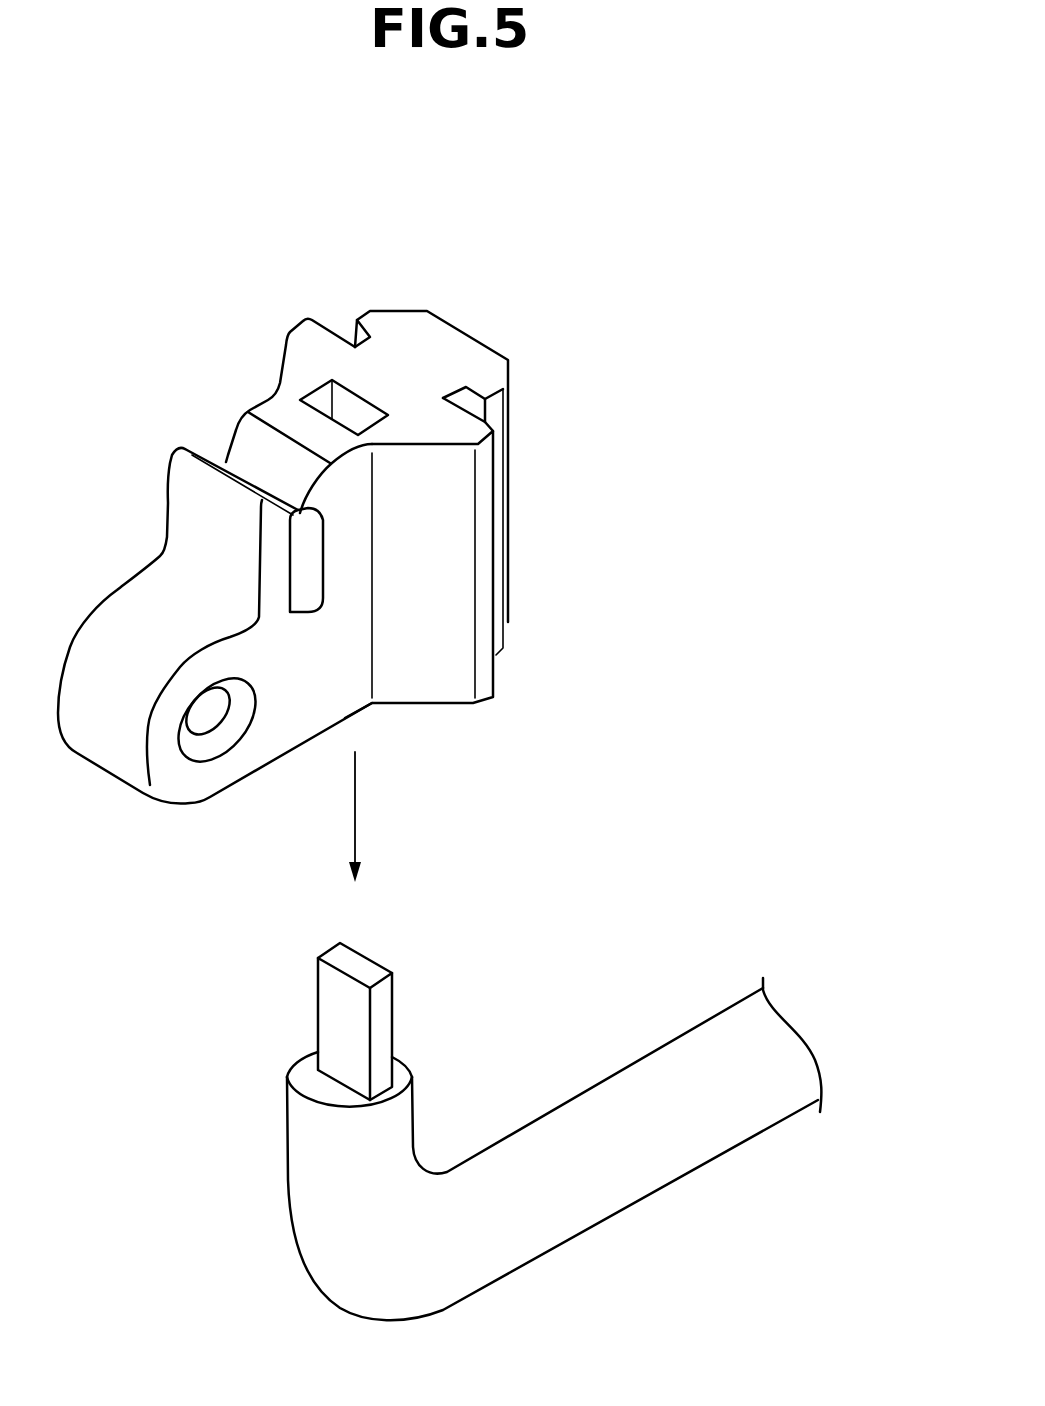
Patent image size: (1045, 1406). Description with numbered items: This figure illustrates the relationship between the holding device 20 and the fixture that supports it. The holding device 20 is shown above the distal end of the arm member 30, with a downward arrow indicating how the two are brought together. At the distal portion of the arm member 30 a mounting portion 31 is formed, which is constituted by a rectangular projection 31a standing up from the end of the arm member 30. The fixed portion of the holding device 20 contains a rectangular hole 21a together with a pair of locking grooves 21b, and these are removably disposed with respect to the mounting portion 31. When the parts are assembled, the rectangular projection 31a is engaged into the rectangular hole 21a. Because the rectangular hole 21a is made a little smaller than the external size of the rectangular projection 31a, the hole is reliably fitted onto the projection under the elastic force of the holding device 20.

The holding device 20 is at (266, 268).
The rectangular hole 21a is at (369, 387).
The locking grooves 21b is at (346, 305).
The arm member 30 is at (653, 1070).
The mounting portion 31 is at (428, 989).
The rectangular projection 31a is at (327, 1005).